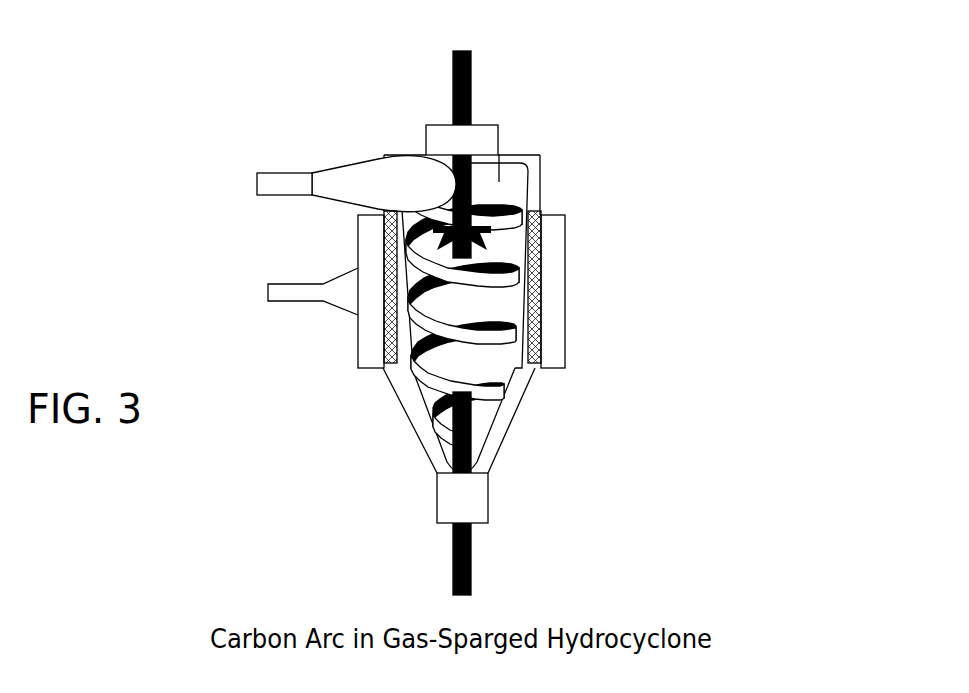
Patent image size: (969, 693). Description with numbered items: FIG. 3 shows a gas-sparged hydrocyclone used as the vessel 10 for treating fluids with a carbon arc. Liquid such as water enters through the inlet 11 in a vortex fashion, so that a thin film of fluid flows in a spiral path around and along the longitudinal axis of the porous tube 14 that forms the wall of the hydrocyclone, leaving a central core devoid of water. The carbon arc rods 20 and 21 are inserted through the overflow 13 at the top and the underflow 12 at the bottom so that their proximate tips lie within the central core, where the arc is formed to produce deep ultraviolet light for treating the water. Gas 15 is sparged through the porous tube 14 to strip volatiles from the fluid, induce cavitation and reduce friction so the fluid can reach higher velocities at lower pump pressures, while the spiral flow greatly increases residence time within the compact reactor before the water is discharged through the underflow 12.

The vessel 10 is at (565, 338).
The inlet 11 is at (257, 180).
The underflow 12 is at (488, 493).
The overflow 13 is at (498, 137).
The porous tube 14 is at (542, 252).
The gas inlet 15 is at (258, 292).
The carbon arc rod 20 is at (471, 82).
The carbon arc rod 21 is at (471, 568).